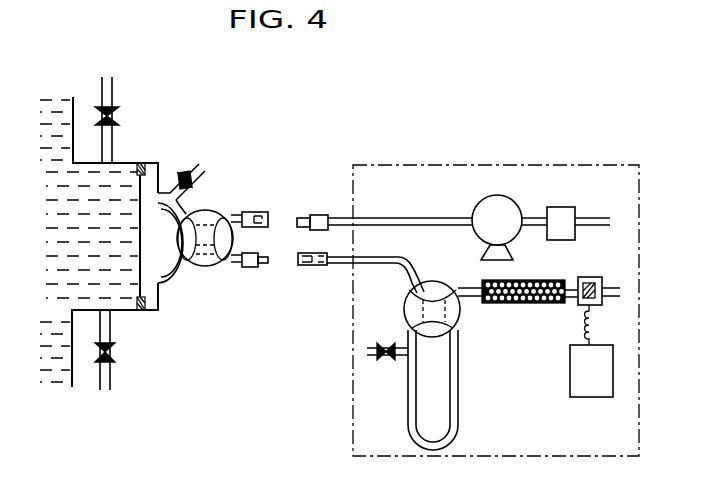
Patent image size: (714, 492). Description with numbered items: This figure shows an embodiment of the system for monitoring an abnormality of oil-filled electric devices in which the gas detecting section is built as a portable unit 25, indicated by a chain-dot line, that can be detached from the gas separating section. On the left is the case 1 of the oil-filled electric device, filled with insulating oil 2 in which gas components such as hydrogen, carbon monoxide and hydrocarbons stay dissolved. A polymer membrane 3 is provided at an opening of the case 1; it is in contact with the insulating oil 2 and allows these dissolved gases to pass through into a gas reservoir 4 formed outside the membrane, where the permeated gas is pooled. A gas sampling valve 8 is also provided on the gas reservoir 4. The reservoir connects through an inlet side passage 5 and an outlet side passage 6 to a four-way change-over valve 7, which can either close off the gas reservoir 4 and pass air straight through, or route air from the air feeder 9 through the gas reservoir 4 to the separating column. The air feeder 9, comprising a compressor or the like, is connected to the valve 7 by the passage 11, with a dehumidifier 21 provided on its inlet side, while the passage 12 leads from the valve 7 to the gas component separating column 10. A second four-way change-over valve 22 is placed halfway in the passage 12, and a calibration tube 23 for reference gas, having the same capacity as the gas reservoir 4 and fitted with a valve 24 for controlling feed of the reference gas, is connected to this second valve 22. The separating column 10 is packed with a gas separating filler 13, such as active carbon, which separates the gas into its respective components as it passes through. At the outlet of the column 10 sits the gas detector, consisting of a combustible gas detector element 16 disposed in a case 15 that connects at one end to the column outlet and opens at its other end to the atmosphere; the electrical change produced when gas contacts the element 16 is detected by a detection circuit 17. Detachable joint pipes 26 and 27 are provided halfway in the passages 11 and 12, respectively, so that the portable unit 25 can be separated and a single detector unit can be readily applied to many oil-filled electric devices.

The case 1 is at (73, 107).
The insulating oil 2 is at (122, 300).
The polymer membrane 3 is at (143, 172).
The gas reservoir 4 is at (155, 302).
The inlet side passage 5 is at (186, 189).
The outlet side passage 6 is at (178, 276).
The four-way change-over valve 7 is at (218, 213).
The gas sampling valve 8 is at (184, 172).
The air feeder 9 is at (477, 202).
The gas component separating column 10 is at (550, 305).
The passage 11 is at (396, 218).
The passage 12 is at (381, 264).
The gas separating filler 13 is at (529, 305).
The case 15 is at (592, 277).
The combustible gas detector element 16 is at (602, 302).
The detection circuit 17 is at (604, 397).
The dehumidifier 21 is at (557, 207).
The second four-way change-over valve 22 is at (460, 316).
The calibration tube 23 is at (459, 374).
The valve 24 is at (384, 362).
The portable unit 25 is at (376, 163).
The detachable joint pipe 26 is at (254, 268).
The detachable joint pipe 27 is at (258, 212).